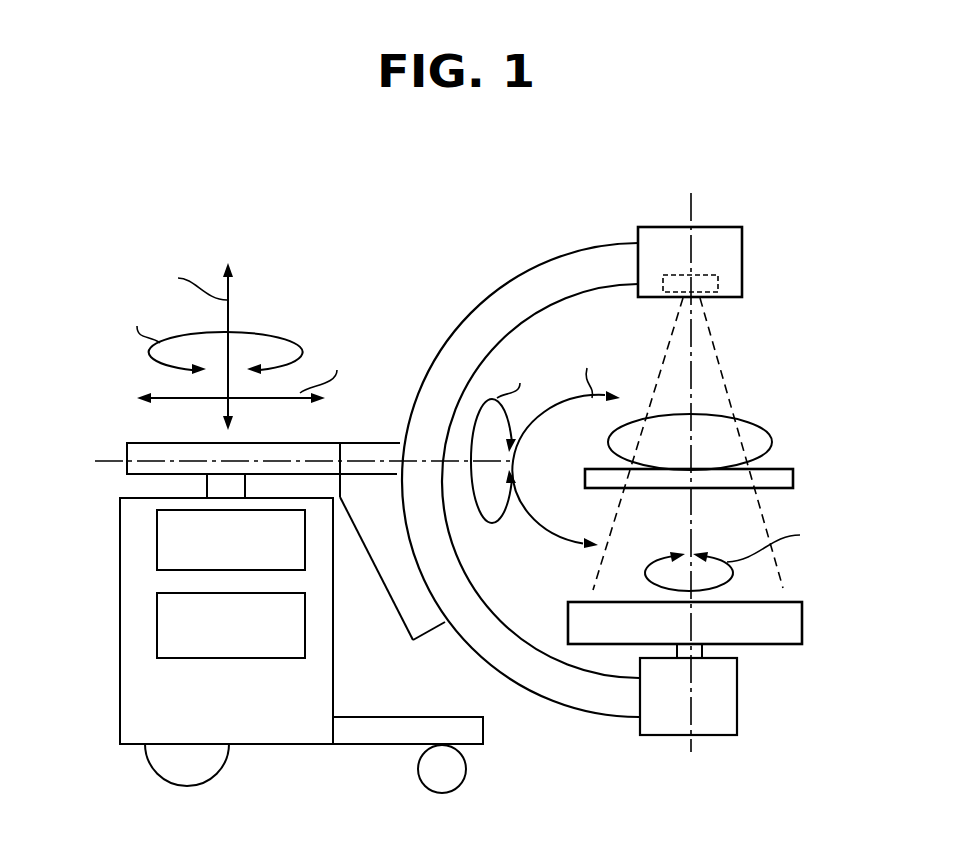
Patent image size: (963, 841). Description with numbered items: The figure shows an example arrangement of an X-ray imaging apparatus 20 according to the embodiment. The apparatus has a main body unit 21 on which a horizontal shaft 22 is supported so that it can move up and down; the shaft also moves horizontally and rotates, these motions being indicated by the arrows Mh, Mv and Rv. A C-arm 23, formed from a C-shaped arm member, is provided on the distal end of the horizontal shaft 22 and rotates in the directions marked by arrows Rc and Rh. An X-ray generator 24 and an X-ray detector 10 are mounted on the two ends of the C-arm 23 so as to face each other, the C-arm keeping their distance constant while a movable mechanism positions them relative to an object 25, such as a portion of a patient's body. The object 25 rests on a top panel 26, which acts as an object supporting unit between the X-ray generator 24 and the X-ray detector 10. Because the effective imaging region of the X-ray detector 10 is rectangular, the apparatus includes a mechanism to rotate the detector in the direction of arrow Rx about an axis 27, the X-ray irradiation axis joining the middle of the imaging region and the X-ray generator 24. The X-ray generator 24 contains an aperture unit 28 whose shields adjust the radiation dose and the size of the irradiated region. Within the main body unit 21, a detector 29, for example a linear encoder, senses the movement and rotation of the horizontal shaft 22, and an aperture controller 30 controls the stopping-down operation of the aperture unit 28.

The X-ray detector 10 is at (787, 625).
The X-ray imaging apparatus 20 is at (114, 258).
The main body unit 21 is at (150, 703).
The horizontal shaft 22 is at (153, 443).
The C-arm 23 is at (483, 307).
The X-ray generator 24 is at (715, 238).
The object 25 is at (757, 423).
The top panel 26 is at (793, 477).
The axis 27 is at (717, 698).
The aperture unit 28 is at (718, 285).
The detector 29 is at (157, 540).
The aperture controller 30 is at (157, 627).